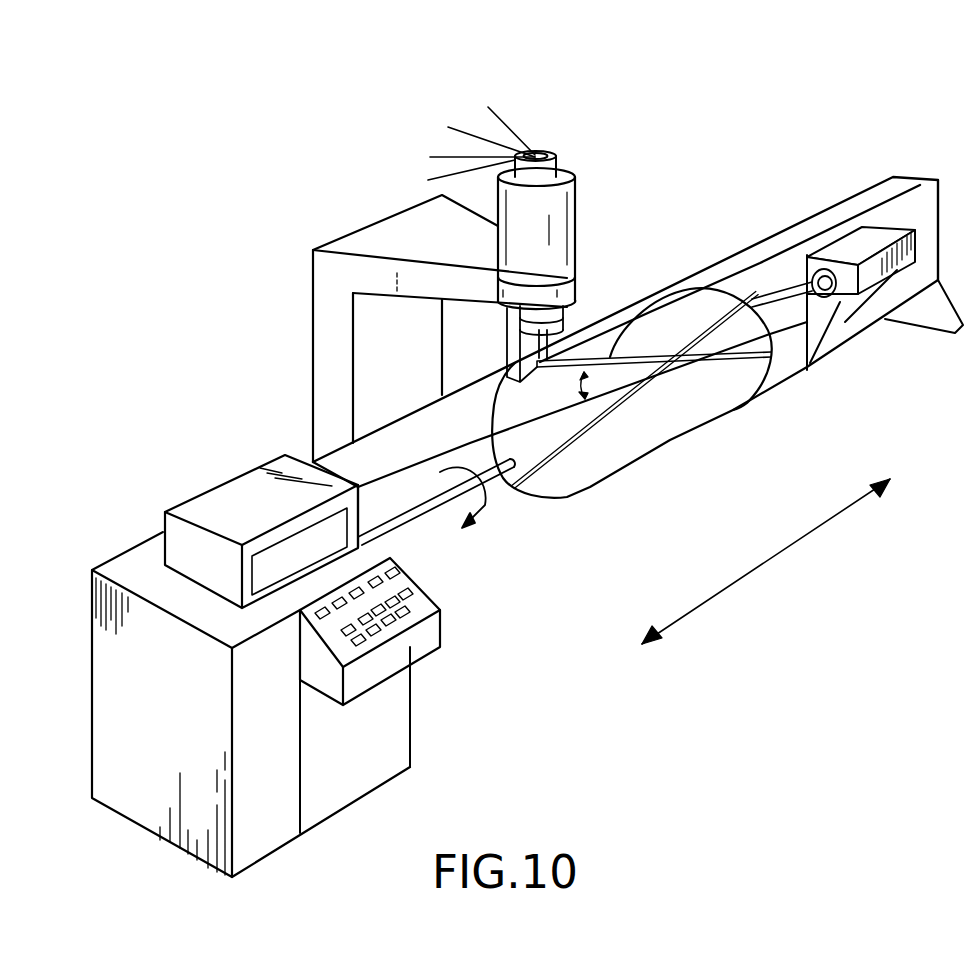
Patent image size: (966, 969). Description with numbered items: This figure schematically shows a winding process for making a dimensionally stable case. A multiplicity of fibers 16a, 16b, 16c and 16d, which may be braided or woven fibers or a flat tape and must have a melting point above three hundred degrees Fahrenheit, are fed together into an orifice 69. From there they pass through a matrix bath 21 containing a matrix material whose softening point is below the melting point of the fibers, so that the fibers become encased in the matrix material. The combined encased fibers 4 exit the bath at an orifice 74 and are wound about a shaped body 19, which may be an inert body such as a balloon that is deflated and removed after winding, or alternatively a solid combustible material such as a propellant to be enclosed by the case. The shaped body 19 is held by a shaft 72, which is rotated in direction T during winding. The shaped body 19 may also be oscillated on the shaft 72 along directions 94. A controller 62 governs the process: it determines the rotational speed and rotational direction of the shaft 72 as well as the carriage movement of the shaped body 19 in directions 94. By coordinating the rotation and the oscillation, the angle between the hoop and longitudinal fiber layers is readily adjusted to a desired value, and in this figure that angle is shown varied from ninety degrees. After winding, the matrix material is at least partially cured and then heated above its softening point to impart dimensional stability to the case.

The fiber 16a is at (522, 140).
The fiber 16b is at (466, 133).
The fiber 16c is at (436, 157).
The fiber 16d is at (430, 180).
The orifice 69 is at (556, 151).
The matrix bath 21 is at (577, 202).
The orifice 74 is at (507, 363).
The encased fibers 4 is at (637, 318).
The shaped body 19 is at (683, 417).
The shaft 72 is at (403, 530).
The controller 62 is at (410, 618).
The directions 94 is at (763, 563).
The direction T is at (498, 503).